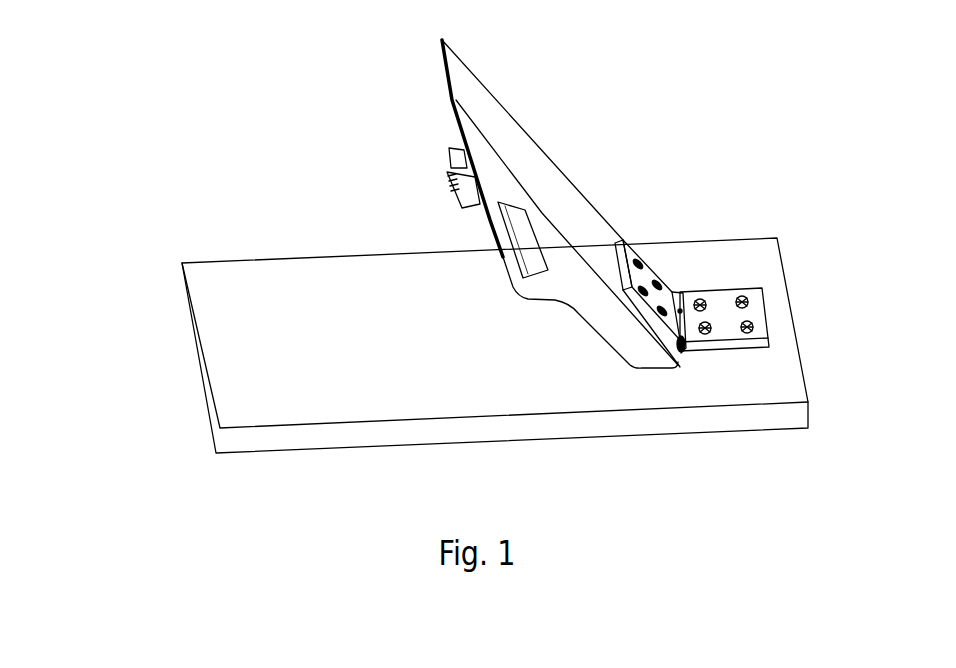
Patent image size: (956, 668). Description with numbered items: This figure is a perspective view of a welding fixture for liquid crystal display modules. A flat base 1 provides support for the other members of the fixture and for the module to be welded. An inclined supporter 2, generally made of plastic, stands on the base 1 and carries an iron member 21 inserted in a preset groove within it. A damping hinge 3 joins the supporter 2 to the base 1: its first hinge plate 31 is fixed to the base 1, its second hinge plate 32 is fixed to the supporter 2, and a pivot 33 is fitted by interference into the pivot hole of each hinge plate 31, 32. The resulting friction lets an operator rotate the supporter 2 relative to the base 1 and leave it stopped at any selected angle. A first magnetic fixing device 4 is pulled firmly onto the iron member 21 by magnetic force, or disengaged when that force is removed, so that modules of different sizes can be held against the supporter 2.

The base 1 is at (288, 368).
The supporter 2 is at (471, 195).
The iron member 21 is at (522, 250).
The first magnetic fixing device 4 is at (455, 162).
The damping hinge 3 is at (710, 299).
The first hinge plate 31 is at (715, 292).
The second hinge plate 32 is at (655, 278).
The pivot 33 is at (680, 310).